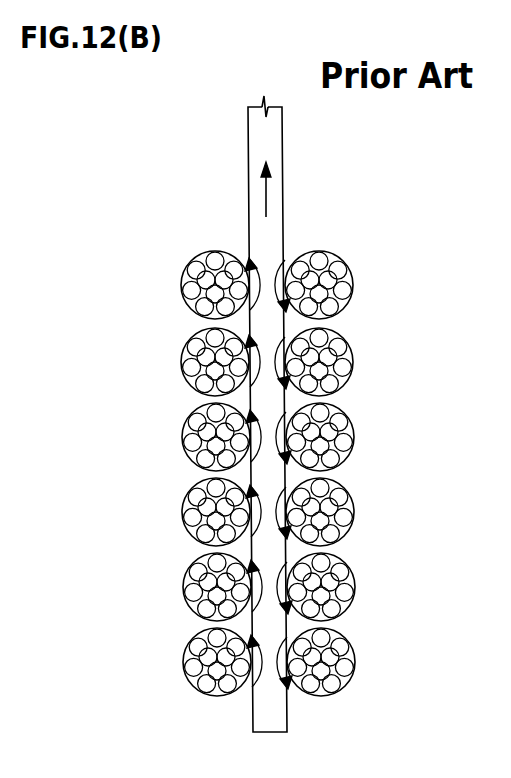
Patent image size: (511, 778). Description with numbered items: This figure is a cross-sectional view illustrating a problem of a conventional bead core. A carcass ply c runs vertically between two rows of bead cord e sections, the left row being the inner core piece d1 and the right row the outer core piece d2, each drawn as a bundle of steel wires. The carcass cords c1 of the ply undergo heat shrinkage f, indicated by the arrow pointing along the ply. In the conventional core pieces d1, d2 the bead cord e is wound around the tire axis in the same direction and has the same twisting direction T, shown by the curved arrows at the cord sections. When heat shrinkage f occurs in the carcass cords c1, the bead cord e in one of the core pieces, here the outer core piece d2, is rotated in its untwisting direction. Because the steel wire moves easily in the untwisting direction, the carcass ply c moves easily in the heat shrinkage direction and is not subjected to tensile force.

The carcass cords c1 is at (317, 414).
The carcass ply c is at (270, 143).
The heat shrinkage f is at (268, 187).
The twisting direction T is at (246, 283).
The bead cord e is at (268, 502).
The inner core piece d1 is at (206, 712).
The outer core piece d2 is at (332, 712).